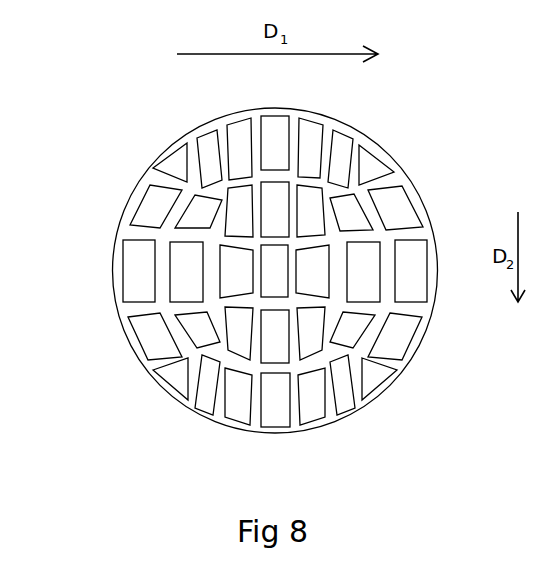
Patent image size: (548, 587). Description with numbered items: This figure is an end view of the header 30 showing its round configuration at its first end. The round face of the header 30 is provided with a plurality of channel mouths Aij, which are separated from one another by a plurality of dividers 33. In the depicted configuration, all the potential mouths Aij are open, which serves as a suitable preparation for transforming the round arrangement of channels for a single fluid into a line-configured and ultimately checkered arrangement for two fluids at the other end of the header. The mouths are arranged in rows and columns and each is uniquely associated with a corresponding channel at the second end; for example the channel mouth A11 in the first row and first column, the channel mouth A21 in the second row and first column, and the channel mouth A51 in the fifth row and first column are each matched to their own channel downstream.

The header 30 is at (241, 233).
The dividers 33 is at (372, 220).
The channel mouths Aij is at (121, 108).
The channel mouth A11 is at (178, 163).
The channel mouth A21 is at (155, 212).
The channel mouth A51 is at (180, 375).